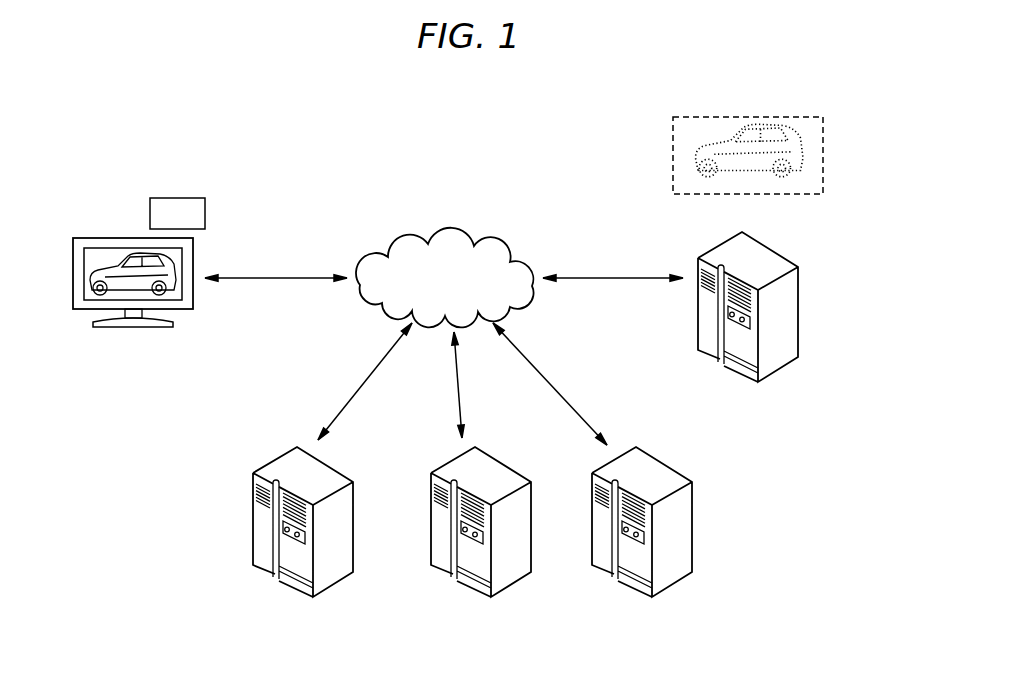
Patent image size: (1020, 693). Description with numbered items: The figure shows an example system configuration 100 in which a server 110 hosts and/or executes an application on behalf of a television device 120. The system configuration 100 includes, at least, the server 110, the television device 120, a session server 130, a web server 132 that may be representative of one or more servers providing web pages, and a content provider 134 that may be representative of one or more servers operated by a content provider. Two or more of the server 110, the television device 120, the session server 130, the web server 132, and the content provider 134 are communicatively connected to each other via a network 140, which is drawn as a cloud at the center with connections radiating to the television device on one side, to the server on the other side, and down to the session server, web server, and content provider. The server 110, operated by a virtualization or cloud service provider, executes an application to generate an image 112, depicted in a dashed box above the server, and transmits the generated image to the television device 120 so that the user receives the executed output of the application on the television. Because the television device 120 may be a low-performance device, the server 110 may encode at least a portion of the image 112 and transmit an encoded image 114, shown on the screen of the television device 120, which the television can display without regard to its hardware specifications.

The system configuration 100 is at (490, 99).
The server 110 is at (770, 246).
The image 112 is at (826, 152).
The encoded image 114 is at (110, 258).
The television device 120 is at (101, 186).
The session server 130 is at (326, 462).
The web server 132 is at (505, 462).
The content provider 134 is at (666, 462).
The network 140 is at (487, 245).